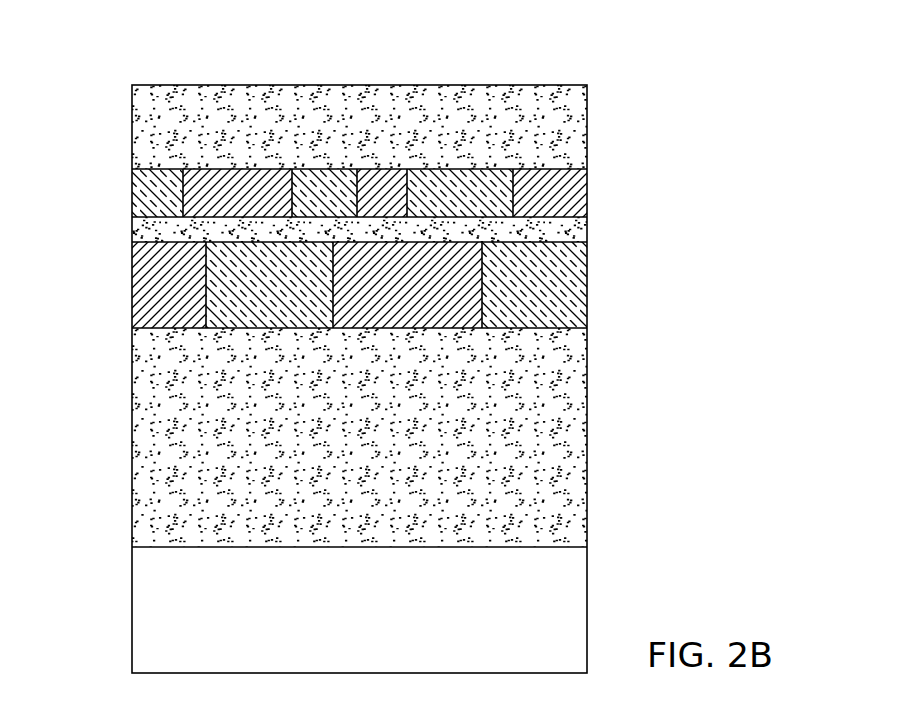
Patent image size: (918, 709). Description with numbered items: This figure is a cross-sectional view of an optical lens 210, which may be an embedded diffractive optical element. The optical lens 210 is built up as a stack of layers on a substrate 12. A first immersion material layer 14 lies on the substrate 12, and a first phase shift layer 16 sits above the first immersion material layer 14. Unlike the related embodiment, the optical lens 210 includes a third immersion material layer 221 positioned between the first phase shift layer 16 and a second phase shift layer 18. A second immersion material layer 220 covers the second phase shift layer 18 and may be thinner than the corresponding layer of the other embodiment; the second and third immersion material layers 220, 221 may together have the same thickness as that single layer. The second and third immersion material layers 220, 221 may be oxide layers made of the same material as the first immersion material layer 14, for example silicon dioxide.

The optical lens 210 is at (708, 83).
The second immersion material layer 220 is at (559, 119).
The second phase shift layer 18 is at (597, 169).
The third immersion material layer 221 is at (152, 227).
The first phase shift layer 16 is at (597, 242).
The first immersion material layer 14 is at (566, 446).
The substrate 12 is at (567, 582).